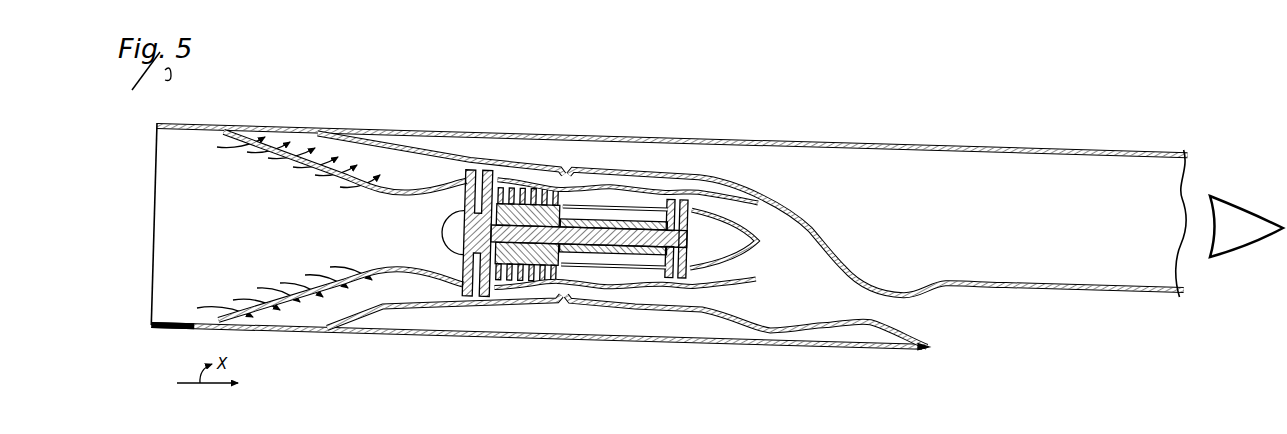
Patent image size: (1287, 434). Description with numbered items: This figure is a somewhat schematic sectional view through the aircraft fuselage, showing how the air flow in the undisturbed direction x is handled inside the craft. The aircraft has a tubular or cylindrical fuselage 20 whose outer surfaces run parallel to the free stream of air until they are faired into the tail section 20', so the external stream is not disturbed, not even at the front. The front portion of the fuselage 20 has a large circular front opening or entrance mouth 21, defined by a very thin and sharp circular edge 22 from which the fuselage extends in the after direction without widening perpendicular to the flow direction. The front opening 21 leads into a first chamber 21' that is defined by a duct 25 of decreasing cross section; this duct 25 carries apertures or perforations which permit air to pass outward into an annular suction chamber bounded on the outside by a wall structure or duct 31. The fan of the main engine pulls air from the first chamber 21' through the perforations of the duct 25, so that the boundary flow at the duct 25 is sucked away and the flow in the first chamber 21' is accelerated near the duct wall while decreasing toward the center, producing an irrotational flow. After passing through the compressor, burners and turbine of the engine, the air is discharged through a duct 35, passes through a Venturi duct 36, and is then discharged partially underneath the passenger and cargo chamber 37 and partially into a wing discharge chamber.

The fuselage 20 is at (669, 230).
The tail section 20' is at (1246, 216).
The front opening 21 is at (134, 224).
The first chamber 21' is at (288, 227).
The circular edge 22 is at (150, 323).
The duct 25 is at (317, 167).
The wall structure or duct 31 is at (385, 160).
The duct 35 is at (807, 283).
The Venturi duct 36 is at (894, 321).
The passenger and cargo chamber 37 is at (1044, 241).